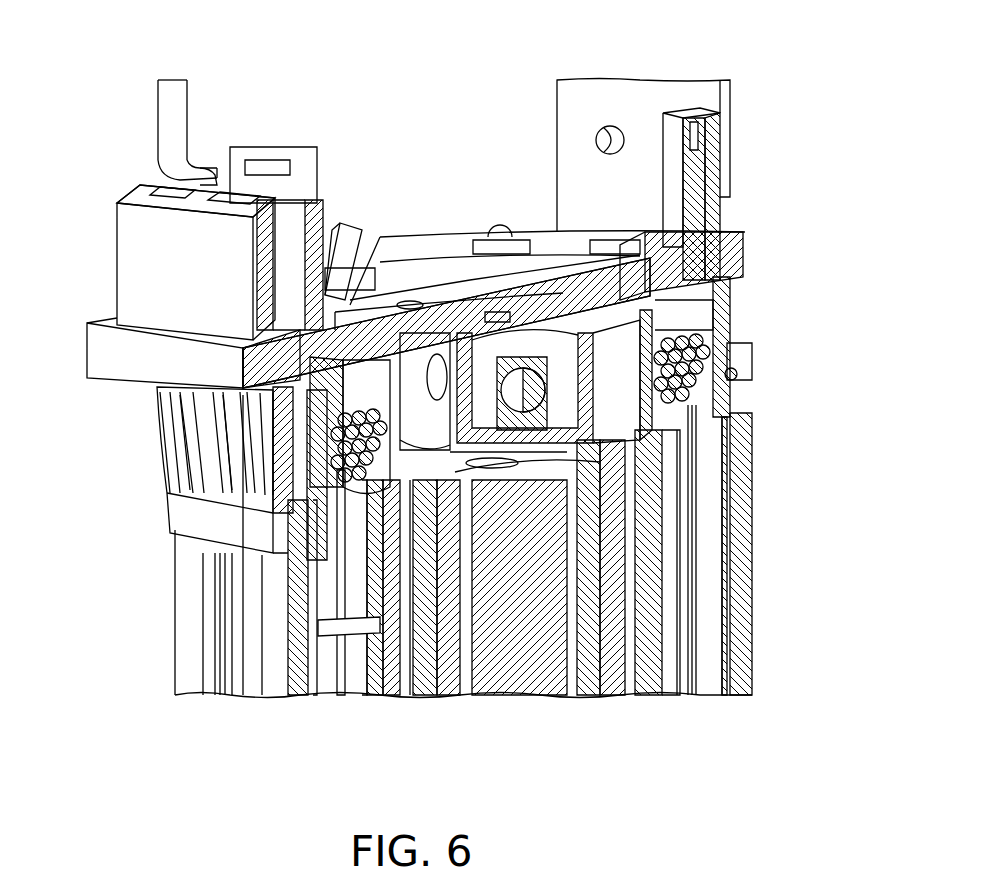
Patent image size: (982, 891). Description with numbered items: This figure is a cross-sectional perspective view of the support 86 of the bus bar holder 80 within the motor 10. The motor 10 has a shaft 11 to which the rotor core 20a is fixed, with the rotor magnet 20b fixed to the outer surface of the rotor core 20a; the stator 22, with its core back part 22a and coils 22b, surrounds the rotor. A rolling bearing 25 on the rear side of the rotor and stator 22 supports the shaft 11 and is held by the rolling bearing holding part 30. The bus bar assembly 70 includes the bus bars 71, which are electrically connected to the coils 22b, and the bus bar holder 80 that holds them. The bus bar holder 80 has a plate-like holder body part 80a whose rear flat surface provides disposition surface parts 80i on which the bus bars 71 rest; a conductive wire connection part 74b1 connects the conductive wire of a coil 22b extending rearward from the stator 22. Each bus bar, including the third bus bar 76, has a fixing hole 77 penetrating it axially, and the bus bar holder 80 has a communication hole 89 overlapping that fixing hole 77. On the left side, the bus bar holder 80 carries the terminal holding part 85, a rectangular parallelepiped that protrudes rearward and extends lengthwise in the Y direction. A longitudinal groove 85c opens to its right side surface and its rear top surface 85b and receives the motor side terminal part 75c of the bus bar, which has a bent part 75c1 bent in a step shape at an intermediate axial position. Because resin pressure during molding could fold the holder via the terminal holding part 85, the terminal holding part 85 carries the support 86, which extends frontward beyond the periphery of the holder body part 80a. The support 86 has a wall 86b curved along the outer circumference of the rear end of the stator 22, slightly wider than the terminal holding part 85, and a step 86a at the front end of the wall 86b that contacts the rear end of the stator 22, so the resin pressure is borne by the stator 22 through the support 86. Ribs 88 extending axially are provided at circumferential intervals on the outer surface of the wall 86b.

The motor 10 is at (753, 185).
The shaft 11 is at (517, 683).
The rotor core 20a is at (448, 680).
The rotor magnet 20b is at (392, 680).
The stator 22 is at (160, 632).
The core back part 22a is at (262, 680).
The coil 22b is at (698, 328).
The rolling bearing 25 is at (700, 280).
The rolling bearing holding part 30 is at (605, 360).
The bus bar assembly 70 is at (477, 225).
The bus bar 71 is at (373, 307).
The third bus bar 76 is at (446, 323).
The conductive wire connection part 74b1 is at (353, 227).
The motor side terminal part 75c is at (187, 97).
The bent part 75c1 is at (198, 173).
The fixing hole 77 is at (423, 305).
The bus bar holder 80 is at (418, 225).
The holder body part 80a is at (457, 233).
The disposition surface part 80i is at (410, 310).
The terminal holding part 85 is at (120, 238).
The top surface 85b is at (150, 192).
The longitudinal groove 85c is at (157, 172).
The support 86 is at (163, 453).
The step 86a is at (290, 560).
The wall 86b is at (287, 453).
The ribs 88 is at (207, 487).
The communication hole 89 is at (497, 312).